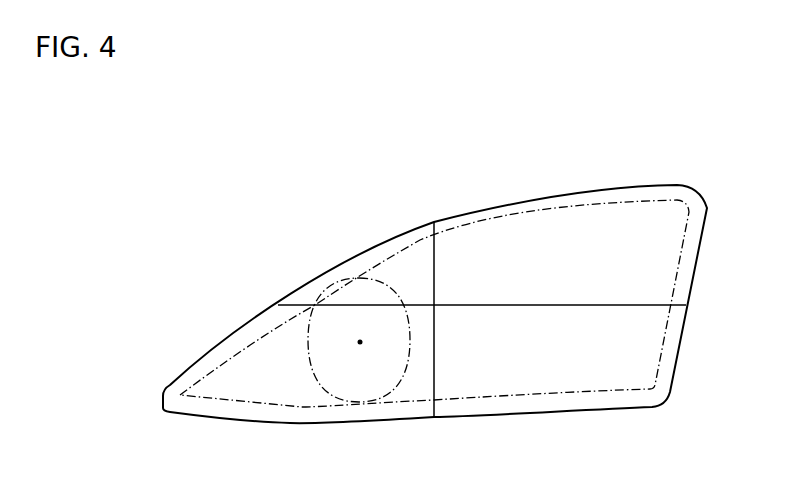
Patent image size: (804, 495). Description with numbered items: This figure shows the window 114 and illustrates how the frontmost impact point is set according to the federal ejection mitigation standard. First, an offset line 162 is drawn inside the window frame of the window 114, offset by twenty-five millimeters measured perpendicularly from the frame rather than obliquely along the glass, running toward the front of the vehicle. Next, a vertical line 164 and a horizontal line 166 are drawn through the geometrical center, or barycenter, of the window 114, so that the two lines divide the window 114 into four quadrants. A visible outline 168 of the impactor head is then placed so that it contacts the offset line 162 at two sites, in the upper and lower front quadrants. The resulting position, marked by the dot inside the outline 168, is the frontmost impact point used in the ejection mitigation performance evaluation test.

The offset line 162 is at (687, 250).
The window 114 is at (538, 380).
The vertical line 164 is at (435, 257).
The horizontal line 166 is at (643, 305).
The visible outline 168 is at (315, 373).